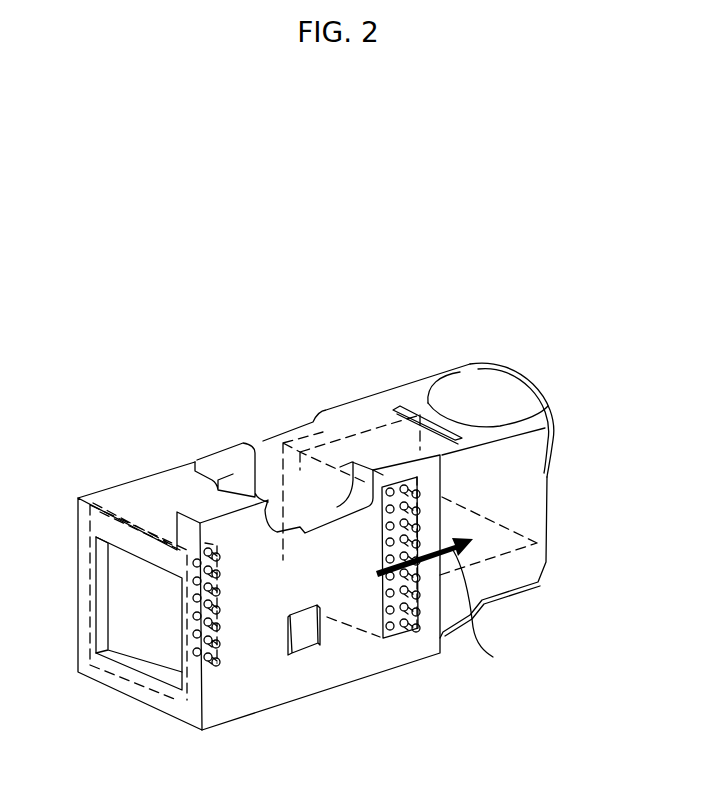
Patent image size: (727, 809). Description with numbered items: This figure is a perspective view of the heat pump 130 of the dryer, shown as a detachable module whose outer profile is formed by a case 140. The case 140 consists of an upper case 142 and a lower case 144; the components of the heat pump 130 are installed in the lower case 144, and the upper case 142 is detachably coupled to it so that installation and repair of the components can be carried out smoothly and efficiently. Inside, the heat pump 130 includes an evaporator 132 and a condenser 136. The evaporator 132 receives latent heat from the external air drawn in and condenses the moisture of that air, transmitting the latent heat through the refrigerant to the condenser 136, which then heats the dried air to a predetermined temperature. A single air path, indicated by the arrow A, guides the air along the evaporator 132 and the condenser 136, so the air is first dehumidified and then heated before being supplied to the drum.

The heat pump 130 is at (396, 313).
The evaporator 132 is at (100, 523).
The condenser 136 is at (357, 618).
The case 140 is at (632, 387).
The upper case 142 is at (548, 406).
The lower case 144 is at (547, 518).